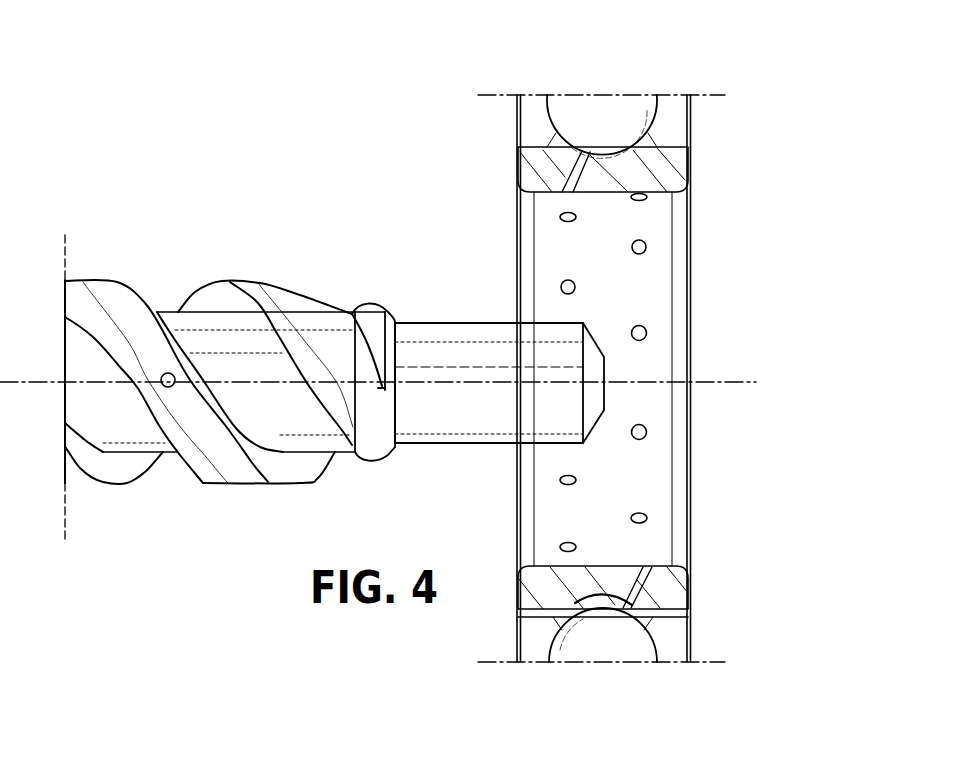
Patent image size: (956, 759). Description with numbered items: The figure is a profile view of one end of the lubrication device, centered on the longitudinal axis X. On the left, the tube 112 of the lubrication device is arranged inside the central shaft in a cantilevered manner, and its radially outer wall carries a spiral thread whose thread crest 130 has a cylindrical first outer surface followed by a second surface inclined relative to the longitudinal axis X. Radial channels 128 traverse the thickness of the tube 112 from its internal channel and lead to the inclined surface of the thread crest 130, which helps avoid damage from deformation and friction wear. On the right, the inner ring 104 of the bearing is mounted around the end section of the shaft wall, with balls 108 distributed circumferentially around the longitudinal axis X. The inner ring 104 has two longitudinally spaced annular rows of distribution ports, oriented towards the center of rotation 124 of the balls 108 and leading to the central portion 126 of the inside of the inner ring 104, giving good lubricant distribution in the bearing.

The inner ring 104 is at (670, 170).
The balls 108 is at (598, 110).
The tube 112 is at (332, 326).
The center of rotation 124 is at (605, 665).
The central portion 126 is at (572, 147).
The radial channels 128 is at (168, 387).
The thread crest 130 is at (277, 290).
The longitudinal axis X is at (737, 377).